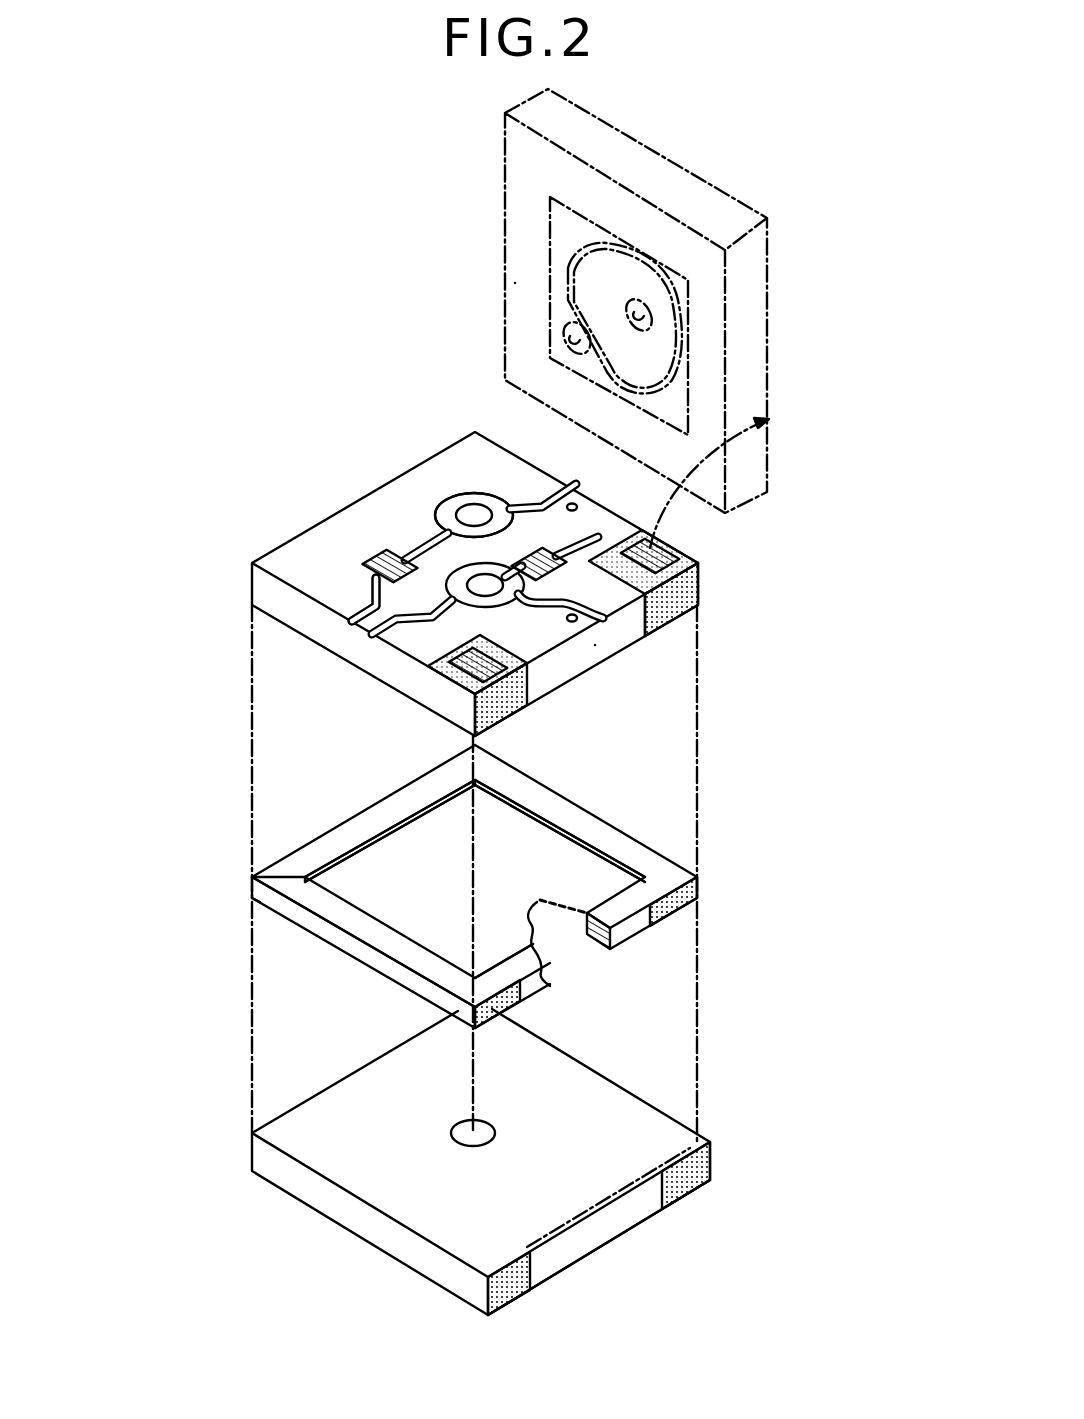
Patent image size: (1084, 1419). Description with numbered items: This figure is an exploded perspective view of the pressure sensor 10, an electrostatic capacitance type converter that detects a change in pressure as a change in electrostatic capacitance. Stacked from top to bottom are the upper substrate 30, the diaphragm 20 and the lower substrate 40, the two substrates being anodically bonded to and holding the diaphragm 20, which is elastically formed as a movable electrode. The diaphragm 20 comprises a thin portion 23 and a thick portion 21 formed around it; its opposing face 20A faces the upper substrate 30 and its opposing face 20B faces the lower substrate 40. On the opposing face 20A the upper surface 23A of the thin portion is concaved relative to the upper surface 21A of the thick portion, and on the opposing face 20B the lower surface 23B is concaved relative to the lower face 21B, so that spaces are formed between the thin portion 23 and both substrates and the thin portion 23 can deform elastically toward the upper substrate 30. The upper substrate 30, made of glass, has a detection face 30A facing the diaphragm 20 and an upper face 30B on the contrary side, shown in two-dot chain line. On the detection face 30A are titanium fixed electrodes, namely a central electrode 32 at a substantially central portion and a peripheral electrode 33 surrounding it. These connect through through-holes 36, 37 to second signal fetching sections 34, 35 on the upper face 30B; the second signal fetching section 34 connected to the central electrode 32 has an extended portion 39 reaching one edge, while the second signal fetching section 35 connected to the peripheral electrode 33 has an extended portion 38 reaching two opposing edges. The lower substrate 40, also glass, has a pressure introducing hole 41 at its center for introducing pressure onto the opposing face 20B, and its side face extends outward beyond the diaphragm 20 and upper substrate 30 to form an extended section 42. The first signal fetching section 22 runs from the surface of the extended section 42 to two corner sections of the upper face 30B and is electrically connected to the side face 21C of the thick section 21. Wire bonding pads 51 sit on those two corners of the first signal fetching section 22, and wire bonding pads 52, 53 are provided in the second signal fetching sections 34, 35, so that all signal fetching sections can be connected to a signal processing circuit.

The pressure sensor 10 is at (752, 168).
The diaphragm 20 is at (452, 889).
The opposing face 20A is at (400, 850).
The opposing face 20B is at (378, 872).
The thick portion 21 is at (357, 932).
The upper surface of thick portion 21A is at (287, 867).
The lower face of thick portion 21B is at (283, 888).
The side face of thick section 21C is at (628, 928).
The first signal fetching section 22 is at (660, 596).
The thin portion 23 is at (440, 932).
The upper surface of thin portion 23A is at (528, 832).
The lower surface of thin portion 23B is at (577, 860).
The upper substrate 30 is at (492, 401).
The detection face 30A is at (523, 287).
The upper face 30B is at (595, 645).
The central electrode 32 is at (566, 272).
The peripheral electrode 33 is at (566, 225).
The second signal fetching section 34 is at (568, 630).
The second signal fetching section 35 is at (440, 510).
The through-hole 36 is at (655, 320).
The through-hole 37 is at (575, 338).
The extended portion 38 is at (535, 503).
The extended portion 39 is at (395, 638).
The lower substrate 40 is at (437, 1162).
The pressure introducing hole 41 is at (483, 1130).
The extended section 42 is at (595, 1205).
The wire bonding pad 51 is at (650, 553).
The wire bonding pad 52 is at (558, 548).
The wire bonding pad 53 is at (378, 560).